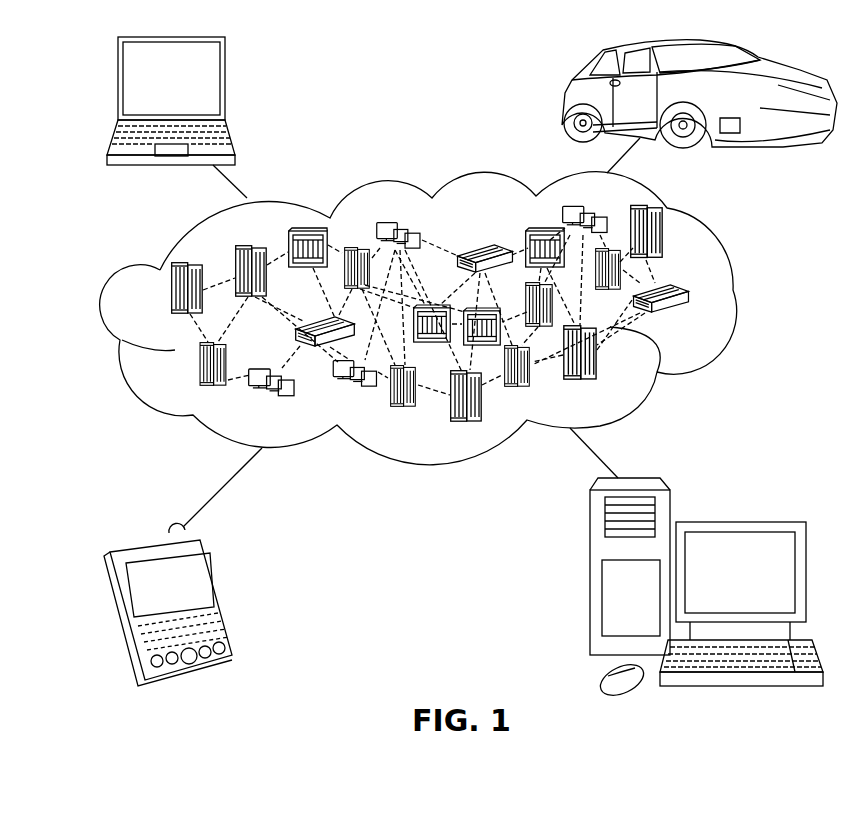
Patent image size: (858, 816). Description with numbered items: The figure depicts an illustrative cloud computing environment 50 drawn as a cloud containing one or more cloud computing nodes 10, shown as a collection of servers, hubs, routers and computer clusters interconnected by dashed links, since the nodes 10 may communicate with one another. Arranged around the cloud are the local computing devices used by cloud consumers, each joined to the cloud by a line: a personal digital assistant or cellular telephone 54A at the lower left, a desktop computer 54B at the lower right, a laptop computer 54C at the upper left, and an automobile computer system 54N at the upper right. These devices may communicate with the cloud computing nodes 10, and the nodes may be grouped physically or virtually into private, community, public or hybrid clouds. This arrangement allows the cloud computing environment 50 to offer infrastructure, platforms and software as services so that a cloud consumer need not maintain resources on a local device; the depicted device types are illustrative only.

The cloud computing nodes 10 is at (441, 332).
The cloud computing environment 50 is at (738, 298).
The personal digital assistant or cellular telephone 54A is at (218, 596).
The desktop computer 54B is at (738, 520).
The laptop computer 54C is at (227, 83).
The automobile computer system 54N is at (567, 97).